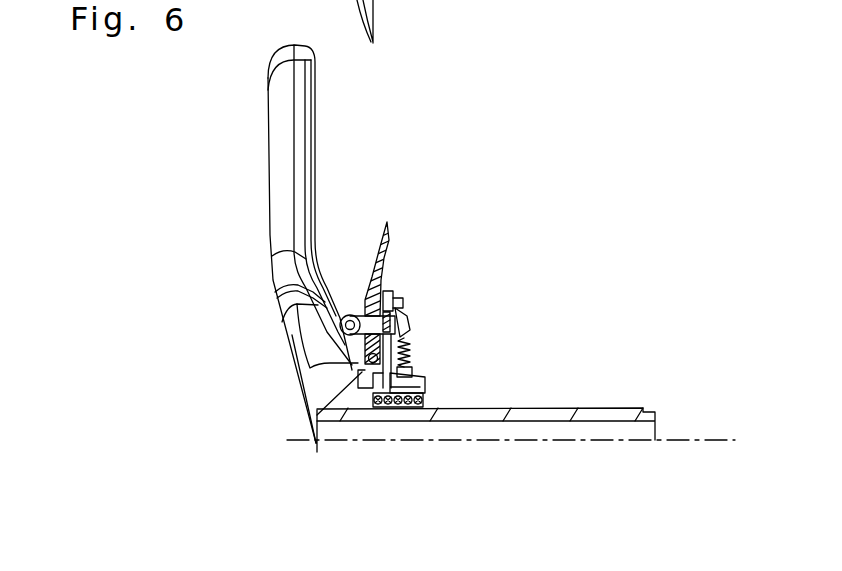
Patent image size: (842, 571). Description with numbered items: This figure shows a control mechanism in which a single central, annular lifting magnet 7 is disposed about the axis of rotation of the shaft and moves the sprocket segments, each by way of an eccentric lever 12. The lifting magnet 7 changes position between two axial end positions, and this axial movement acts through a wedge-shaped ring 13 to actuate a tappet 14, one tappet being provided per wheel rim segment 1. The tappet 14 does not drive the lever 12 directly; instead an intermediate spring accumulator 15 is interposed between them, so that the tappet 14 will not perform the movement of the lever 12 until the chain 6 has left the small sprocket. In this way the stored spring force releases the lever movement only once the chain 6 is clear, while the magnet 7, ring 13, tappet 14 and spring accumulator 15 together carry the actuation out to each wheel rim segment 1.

The wheel rim segment 1 is at (376, 285).
The chain 6 is at (383, 294).
The lever 12 is at (403, 302).
The spring accumulator 15 is at (410, 342).
The tappet 14 is at (412, 360).
The wedge-shaped ring 13 is at (425, 380).
The lifting magnet 7 is at (415, 403).